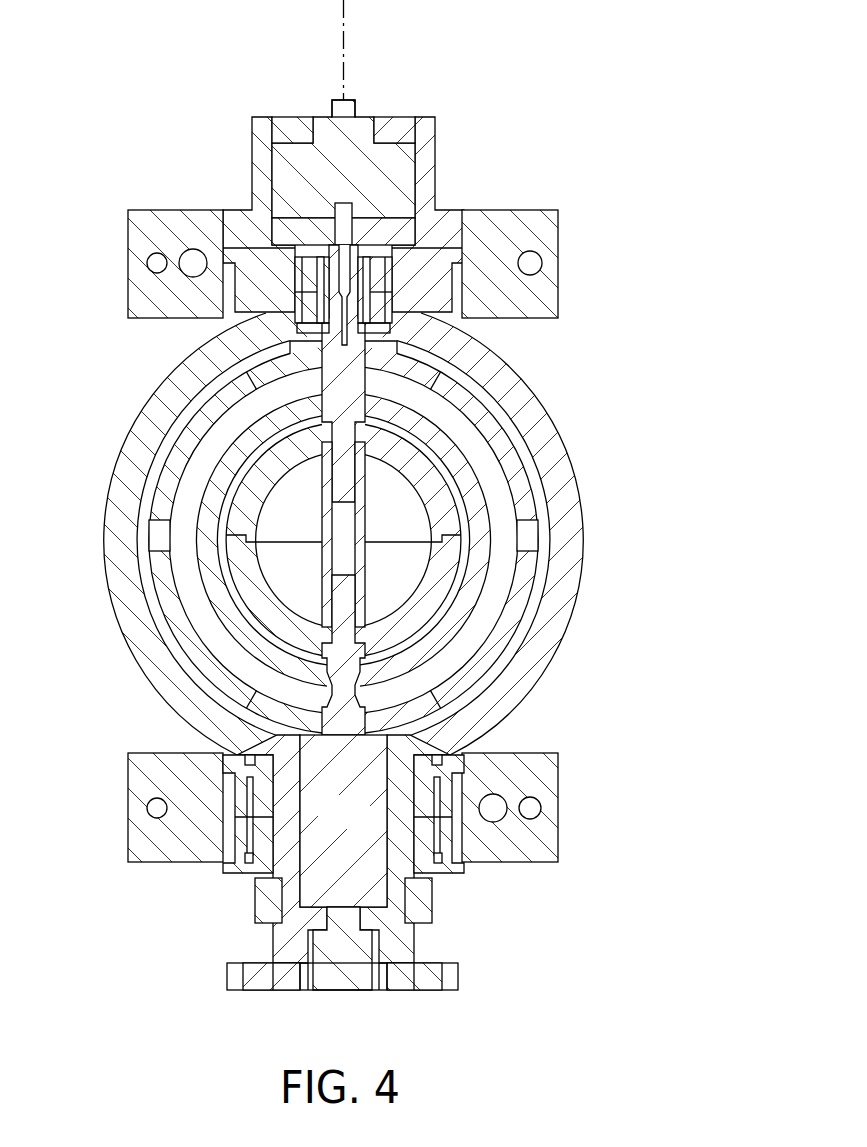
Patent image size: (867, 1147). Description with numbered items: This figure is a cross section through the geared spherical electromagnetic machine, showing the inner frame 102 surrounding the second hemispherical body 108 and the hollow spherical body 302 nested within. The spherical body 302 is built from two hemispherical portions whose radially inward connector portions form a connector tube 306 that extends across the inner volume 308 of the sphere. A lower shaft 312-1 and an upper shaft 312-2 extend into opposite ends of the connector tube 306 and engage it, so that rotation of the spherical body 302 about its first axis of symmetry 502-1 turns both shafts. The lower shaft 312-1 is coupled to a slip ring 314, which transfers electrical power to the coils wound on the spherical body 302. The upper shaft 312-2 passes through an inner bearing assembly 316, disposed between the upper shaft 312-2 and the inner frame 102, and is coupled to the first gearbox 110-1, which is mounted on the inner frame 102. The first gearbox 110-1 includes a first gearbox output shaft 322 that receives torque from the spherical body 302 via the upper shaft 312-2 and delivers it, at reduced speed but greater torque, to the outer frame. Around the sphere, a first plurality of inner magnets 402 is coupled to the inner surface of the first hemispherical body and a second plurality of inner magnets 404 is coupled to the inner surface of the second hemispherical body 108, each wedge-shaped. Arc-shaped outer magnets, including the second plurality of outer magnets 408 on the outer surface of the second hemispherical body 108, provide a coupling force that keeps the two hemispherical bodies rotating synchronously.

The inner frame 102 is at (566, 444).
The second hemispherical body 108 is at (210, 438).
The first gearbox 110-1 is at (353, 140).
The spherical body 302 is at (420, 614).
The connector tube 306 is at (330, 492).
The inner volume 308 is at (318, 532).
The lower shaft 312-1 is at (348, 600).
The upper shaft 312-2 is at (352, 403).
The slip ring 314 is at (365, 824).
The inner bearing assembly 316 is at (374, 258).
The first gearbox output shaft 322 is at (333, 98).
The first plurality of inner magnets 402 is at (227, 575).
The second plurality of inner magnets 404 is at (467, 515).
The second plurality of outer magnets 408 is at (118, 472).
The first axis of symmetry 502-1 is at (344, 25).